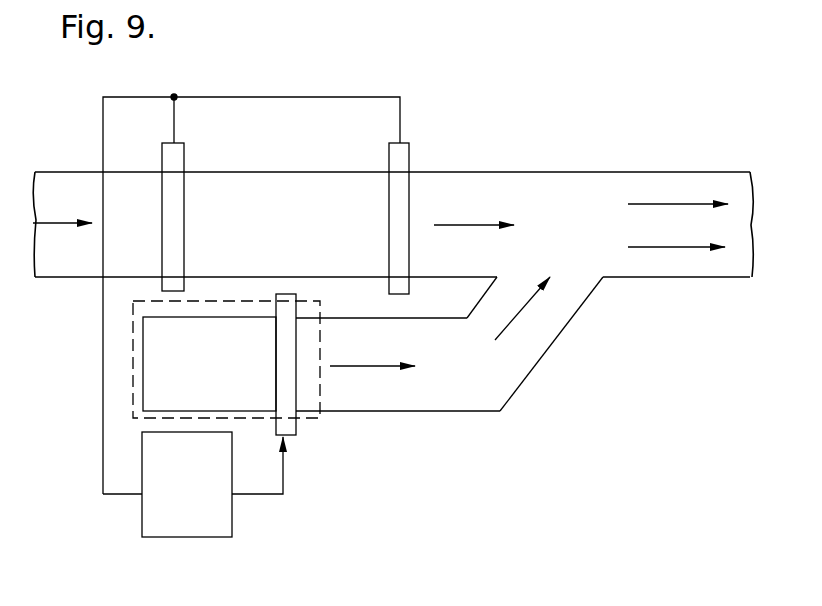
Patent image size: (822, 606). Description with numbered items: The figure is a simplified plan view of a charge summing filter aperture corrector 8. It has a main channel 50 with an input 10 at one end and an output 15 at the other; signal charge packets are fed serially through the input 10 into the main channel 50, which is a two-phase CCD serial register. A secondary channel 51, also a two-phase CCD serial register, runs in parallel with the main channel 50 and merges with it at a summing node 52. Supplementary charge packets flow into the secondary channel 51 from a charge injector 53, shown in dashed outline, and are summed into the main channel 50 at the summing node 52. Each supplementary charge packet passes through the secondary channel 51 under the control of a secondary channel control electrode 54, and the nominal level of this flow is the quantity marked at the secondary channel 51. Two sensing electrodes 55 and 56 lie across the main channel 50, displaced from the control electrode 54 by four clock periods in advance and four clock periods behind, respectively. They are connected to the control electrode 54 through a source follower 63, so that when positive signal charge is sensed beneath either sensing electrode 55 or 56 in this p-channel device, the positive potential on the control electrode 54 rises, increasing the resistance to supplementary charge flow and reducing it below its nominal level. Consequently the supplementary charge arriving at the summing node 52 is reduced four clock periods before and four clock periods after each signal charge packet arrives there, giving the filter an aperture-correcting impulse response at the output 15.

The flow measuring apparatus 8 is at (501, 135).
The input 10 is at (53, 182).
The output 15 is at (702, 180).
The main channel 50 is at (290, 230).
The secondary channel 51 is at (492, 397).
The summing node 52 is at (597, 260).
The charge injector 53 is at (128, 393).
The secondary channel control electrode 54 is at (293, 418).
The sensing electrode 55 is at (185, 145).
The sensing electrode 56 is at (409, 145).
The source follower 63 is at (195, 492).